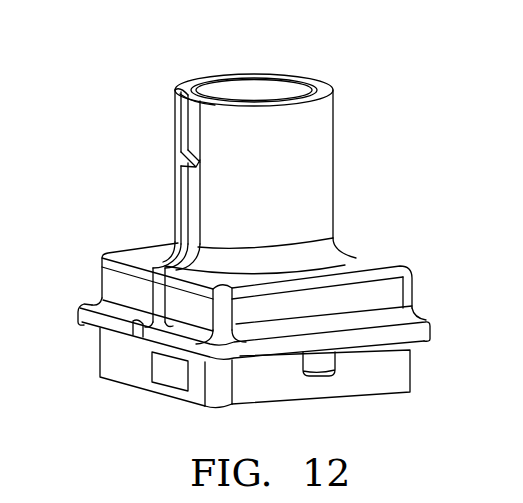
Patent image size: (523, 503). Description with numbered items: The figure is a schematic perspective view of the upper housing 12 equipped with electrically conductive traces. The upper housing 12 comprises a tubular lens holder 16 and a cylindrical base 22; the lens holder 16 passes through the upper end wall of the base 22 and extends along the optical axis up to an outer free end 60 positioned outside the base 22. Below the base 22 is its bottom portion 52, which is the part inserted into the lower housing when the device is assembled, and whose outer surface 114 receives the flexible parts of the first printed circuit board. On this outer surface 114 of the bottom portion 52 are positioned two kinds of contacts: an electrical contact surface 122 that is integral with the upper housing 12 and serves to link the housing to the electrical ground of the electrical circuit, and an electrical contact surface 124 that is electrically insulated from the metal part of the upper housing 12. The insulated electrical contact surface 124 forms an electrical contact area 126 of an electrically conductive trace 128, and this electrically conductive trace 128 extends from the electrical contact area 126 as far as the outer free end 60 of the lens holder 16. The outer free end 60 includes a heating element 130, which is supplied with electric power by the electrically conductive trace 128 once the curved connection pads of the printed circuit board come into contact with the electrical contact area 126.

The upper housing 12 is at (352, 82).
The tubular lens holder 16 is at (371, 178).
The cylindrical base 22 is at (418, 287).
The bottom portion 52 is at (418, 360).
The outer free end 60 is at (212, 67).
The heating element 130 is at (187, 90).
The electrically conductive trace 128 is at (188, 191).
The electrical contact surface 122 is at (200, 397).
The outer surface 114 is at (125, 357).
The electrical contact surface 124 is at (162, 368).
The electrical contact area 126 is at (166, 392).